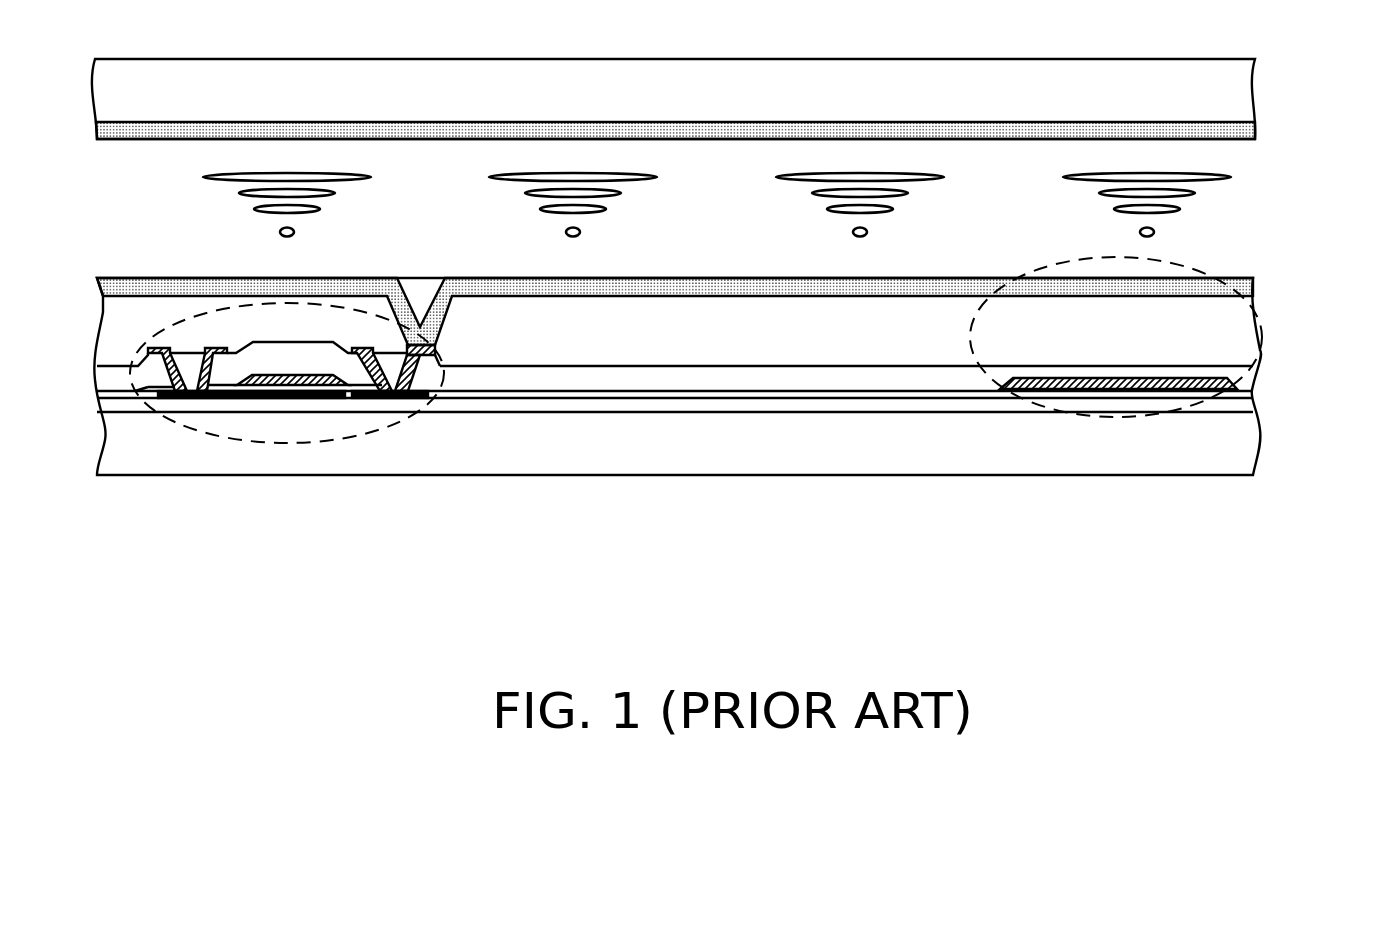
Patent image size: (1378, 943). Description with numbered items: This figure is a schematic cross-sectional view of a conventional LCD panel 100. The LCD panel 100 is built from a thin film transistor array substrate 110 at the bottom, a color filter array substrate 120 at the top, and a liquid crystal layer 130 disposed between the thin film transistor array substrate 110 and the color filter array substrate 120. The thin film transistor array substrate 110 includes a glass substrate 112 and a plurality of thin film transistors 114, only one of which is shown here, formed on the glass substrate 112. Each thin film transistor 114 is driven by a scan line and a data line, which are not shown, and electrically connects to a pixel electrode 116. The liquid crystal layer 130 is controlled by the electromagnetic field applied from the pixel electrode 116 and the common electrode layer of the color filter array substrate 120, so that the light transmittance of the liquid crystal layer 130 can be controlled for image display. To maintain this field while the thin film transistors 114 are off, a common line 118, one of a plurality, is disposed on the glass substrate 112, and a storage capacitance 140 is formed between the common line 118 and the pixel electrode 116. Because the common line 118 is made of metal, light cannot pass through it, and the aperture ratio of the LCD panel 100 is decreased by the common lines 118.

The LCD panel 100 is at (717, 329).
The thin film transistor array substrate 110 is at (718, 413).
The glass substrate 112 is at (553, 452).
The thin film transistor 114 is at (297, 445).
The pixel electrode 116 is at (688, 287).
The common line 118 is at (1030, 390).
The color filter array substrate 120 is at (1281, 52).
The liquid crystal layer 130 is at (1281, 139).
The storage capacitance 140 is at (1107, 418).